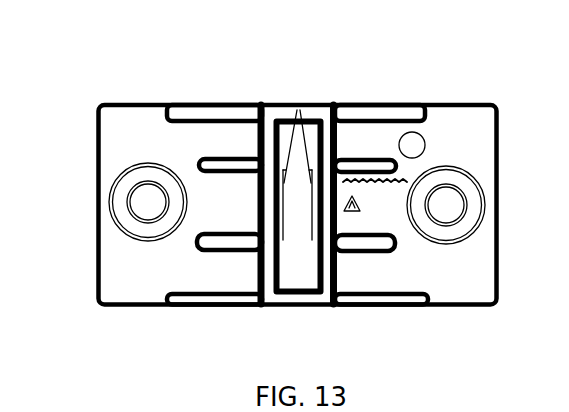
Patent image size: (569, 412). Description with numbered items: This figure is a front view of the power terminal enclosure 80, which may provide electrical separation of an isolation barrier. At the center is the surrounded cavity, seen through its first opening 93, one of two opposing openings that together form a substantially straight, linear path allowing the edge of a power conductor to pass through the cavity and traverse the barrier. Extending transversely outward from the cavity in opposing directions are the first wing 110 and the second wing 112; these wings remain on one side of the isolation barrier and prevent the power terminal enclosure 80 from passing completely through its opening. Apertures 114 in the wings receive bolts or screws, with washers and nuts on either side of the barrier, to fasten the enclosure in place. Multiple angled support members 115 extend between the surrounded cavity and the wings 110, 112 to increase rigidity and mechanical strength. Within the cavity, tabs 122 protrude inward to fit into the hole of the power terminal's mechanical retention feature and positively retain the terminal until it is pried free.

The power terminal enclosure 80 is at (154, 52).
The first wing 110 is at (128, 278).
The second wing 112 is at (148, 193).
The apertures 114 is at (452, 200).
The angled support members 115 is at (220, 122).
The tabs 122 is at (298, 114).
The first opening 93 is at (292, 270).